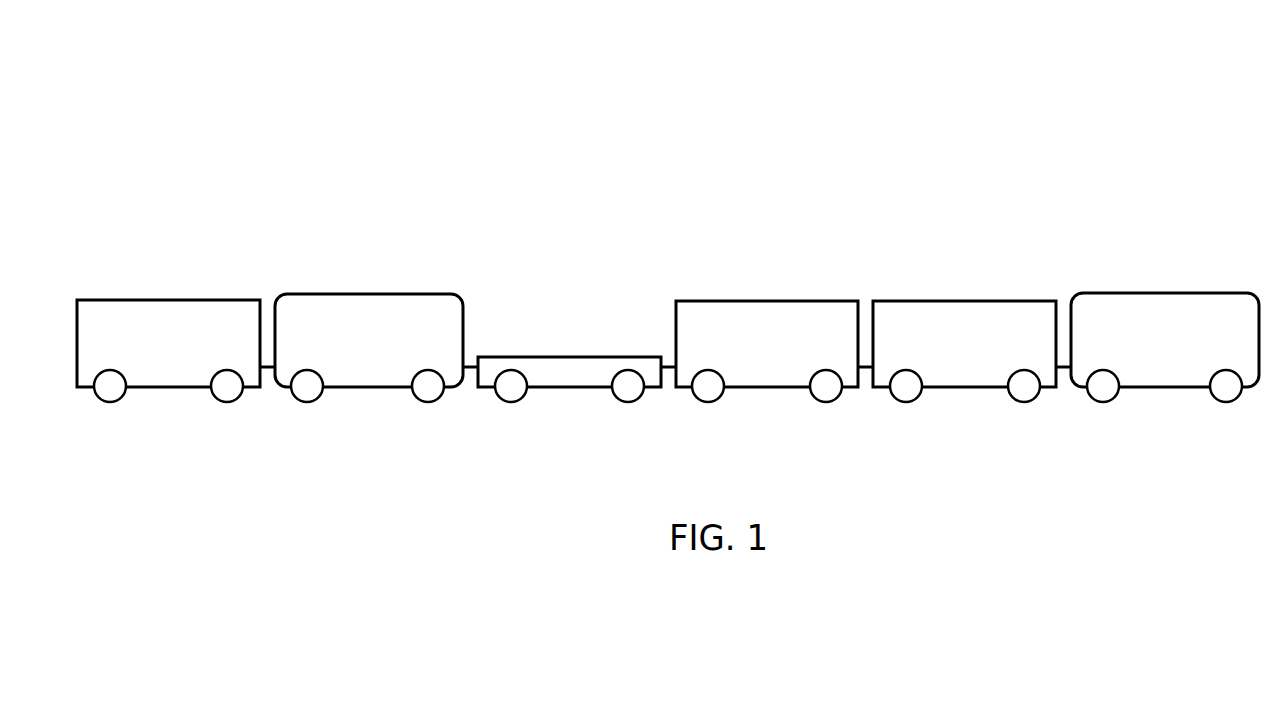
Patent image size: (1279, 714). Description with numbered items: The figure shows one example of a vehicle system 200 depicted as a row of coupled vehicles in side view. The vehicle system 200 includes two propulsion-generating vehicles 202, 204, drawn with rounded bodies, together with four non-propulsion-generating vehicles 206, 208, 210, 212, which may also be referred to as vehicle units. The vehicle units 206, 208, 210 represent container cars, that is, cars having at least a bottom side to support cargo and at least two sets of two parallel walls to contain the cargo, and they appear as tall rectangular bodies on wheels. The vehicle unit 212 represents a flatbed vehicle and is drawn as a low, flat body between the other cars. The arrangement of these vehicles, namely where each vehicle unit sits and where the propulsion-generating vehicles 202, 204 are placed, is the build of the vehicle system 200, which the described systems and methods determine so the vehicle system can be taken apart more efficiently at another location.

The vehicle system 200 is at (1005, 88).
The propulsion-generating vehicle 202 is at (1163, 293).
The propulsion-generating vehicle 204 is at (368, 294).
The non-propulsion-generating vehicle 206 is at (963, 301).
The non-propulsion-generating vehicle 208 is at (766, 301).
The non-propulsion-generating vehicle 210 is at (167, 300).
The non-propulsion-generating vehicle 212 is at (568, 357).